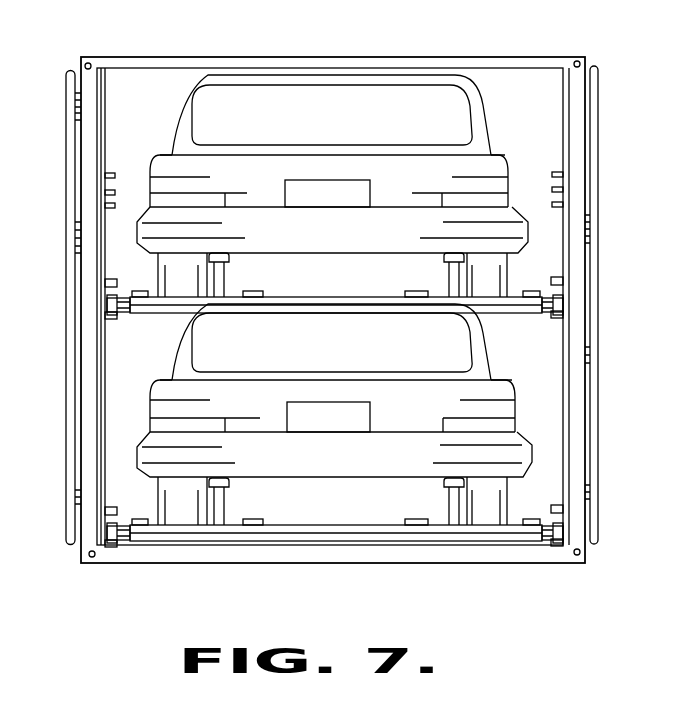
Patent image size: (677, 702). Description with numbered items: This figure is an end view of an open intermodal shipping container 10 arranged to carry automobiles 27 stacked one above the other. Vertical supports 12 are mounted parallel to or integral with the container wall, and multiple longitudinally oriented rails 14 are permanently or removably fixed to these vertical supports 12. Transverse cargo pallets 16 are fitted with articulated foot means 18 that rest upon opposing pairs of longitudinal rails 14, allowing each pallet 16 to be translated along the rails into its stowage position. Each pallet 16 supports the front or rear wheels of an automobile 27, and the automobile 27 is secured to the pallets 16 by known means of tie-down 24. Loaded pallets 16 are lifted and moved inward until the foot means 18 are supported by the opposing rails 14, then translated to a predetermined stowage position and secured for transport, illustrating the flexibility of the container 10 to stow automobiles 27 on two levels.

The intermodal shipping container 10 is at (531, 52).
The vertical supports 12 is at (105, 130).
The longitudinally oriented rails 14 is at (105, 283).
The transverse cargo pallet 16 is at (165, 313).
The articulated foot means 18 is at (107, 307).
The tie-down 24 is at (226, 285).
The automobiles 27 is at (486, 112).